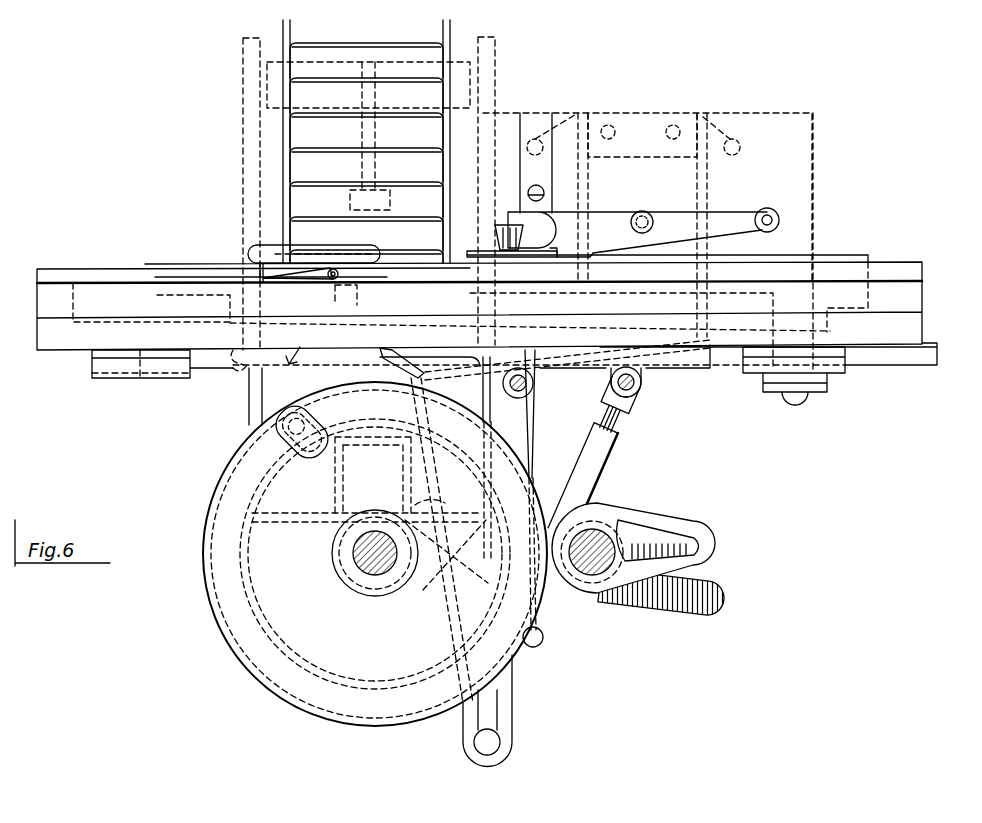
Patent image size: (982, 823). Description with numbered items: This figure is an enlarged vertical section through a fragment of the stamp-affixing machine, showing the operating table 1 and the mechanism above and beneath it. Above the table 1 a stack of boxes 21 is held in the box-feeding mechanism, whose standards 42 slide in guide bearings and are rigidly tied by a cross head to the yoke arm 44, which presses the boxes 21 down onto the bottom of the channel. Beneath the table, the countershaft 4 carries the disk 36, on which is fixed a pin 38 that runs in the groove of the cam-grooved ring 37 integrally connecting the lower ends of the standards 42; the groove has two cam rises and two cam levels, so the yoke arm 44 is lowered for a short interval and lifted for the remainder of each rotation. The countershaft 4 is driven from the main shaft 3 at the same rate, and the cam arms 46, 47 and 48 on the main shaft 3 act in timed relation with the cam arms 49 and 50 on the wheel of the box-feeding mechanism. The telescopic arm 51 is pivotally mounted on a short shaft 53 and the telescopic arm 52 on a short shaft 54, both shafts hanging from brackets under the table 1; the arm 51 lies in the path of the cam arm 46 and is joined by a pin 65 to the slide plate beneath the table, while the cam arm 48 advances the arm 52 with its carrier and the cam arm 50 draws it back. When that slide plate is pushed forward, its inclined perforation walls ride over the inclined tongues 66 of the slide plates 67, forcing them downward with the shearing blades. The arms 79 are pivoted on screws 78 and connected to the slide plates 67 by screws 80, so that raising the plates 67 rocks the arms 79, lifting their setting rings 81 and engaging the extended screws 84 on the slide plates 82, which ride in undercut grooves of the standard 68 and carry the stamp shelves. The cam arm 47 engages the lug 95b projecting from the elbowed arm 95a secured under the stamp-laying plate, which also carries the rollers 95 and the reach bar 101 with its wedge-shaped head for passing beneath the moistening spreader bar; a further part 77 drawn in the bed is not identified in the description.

The table 1 is at (50, 338).
The main shaft 3 is at (599, 527).
The countershaft 4 is at (360, 578).
The box 21 is at (369, 52).
The disk 36 is at (288, 683).
The cam-grooved ring 37 is at (215, 573).
The pin 38 is at (292, 428).
The standards 42 is at (243, 173).
The yoke arm 44 is at (350, 199).
The cam arm 46 is at (428, 503).
The cam arm 47 is at (540, 645).
The cam arm 48 is at (470, 98).
The cam arm 49 is at (687, 527).
The cam arm 50 is at (686, 607).
The telescopic arm 51 is at (538, 429).
The telescopic arm 52 is at (599, 459).
The short shaft 53 is at (495, 743).
The short shaft 54 is at (500, 688).
The pin 65 is at (534, 384).
The inclined tongues 66 is at (650, 352).
The slide plates 67 is at (681, 193).
The standard 68 is at (793, 169).
The slide 77 is at (162, 293).
The screws 78 is at (779, 218).
The arms 79 is at (728, 229).
The screws 80 is at (643, 211).
The setting rings 81 is at (496, 230).
The slide plates 82 is at (522, 128).
The extended screw 84 is at (537, 185).
The rollers 95 is at (340, 270).
The elbowed arm 95a is at (240, 362).
The lug 95b is at (408, 380).
The reach bar 101 is at (262, 252).